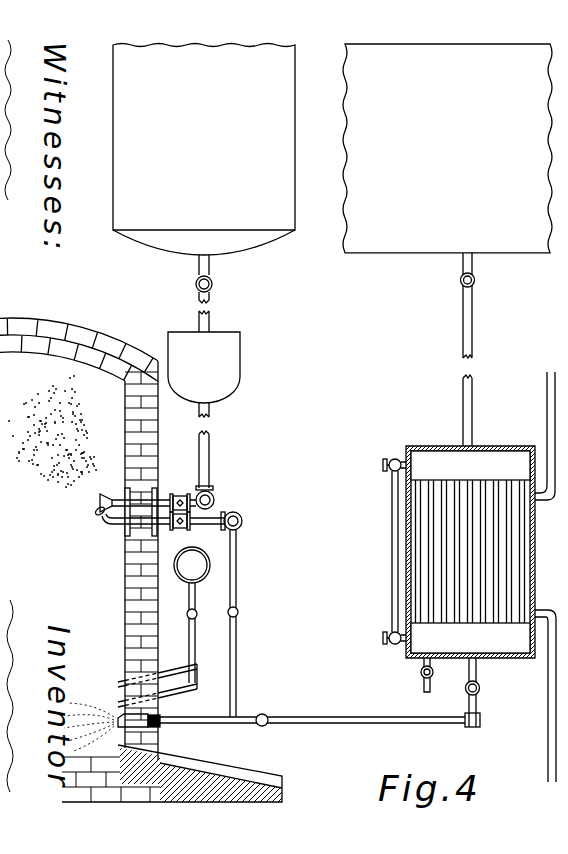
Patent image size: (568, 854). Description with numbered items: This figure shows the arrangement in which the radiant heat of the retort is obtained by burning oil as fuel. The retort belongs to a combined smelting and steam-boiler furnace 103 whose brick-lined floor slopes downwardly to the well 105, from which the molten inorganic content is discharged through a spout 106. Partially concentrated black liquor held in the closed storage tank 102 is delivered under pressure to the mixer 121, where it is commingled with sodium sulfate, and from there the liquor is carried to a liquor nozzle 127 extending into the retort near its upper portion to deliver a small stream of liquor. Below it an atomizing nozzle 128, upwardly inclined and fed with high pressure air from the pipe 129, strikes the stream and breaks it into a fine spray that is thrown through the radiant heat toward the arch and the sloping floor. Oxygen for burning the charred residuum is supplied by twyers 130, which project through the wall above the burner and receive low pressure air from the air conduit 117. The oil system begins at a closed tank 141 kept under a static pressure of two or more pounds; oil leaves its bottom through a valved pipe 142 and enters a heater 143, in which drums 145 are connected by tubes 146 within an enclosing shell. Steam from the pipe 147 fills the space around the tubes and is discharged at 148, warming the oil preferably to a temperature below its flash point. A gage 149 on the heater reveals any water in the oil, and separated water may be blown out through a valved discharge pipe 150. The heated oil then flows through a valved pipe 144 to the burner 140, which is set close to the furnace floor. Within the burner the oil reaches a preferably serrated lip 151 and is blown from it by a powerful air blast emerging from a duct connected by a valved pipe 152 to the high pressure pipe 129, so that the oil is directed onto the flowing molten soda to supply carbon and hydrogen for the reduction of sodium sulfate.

The closed storage tank 102 is at (204, 168).
The combined smelting and steam-boiler furnace 103 is at (42, 322).
The well 105 is at (91, 730).
The spout 106 is at (268, 783).
The air conduit 117 is at (212, 565).
The mixer 121 is at (243, 343).
The liquor nozzle 127 is at (117, 498).
The atomizing nozzle 128 is at (99, 519).
The high pressure air pipe 129 is at (241, 517).
The twyer 130 is at (178, 666).
The burner 140 is at (137, 729).
The closed tank 141 is at (447, 148).
The valved pipe 142 is at (462, 322).
The heater 143 is at (406, 562).
The valved pipe 144 is at (416, 725).
The drum 145 is at (470, 552).
The tube 146 is at (422, 592).
The steam pipe 147 is at (547, 410).
The steam discharge 148 is at (548, 746).
The gage 149 is at (392, 524).
The valved discharge pipe 150 is at (422, 689).
The lip 151 is at (116, 722).
The valved pipe 152 is at (238, 666).